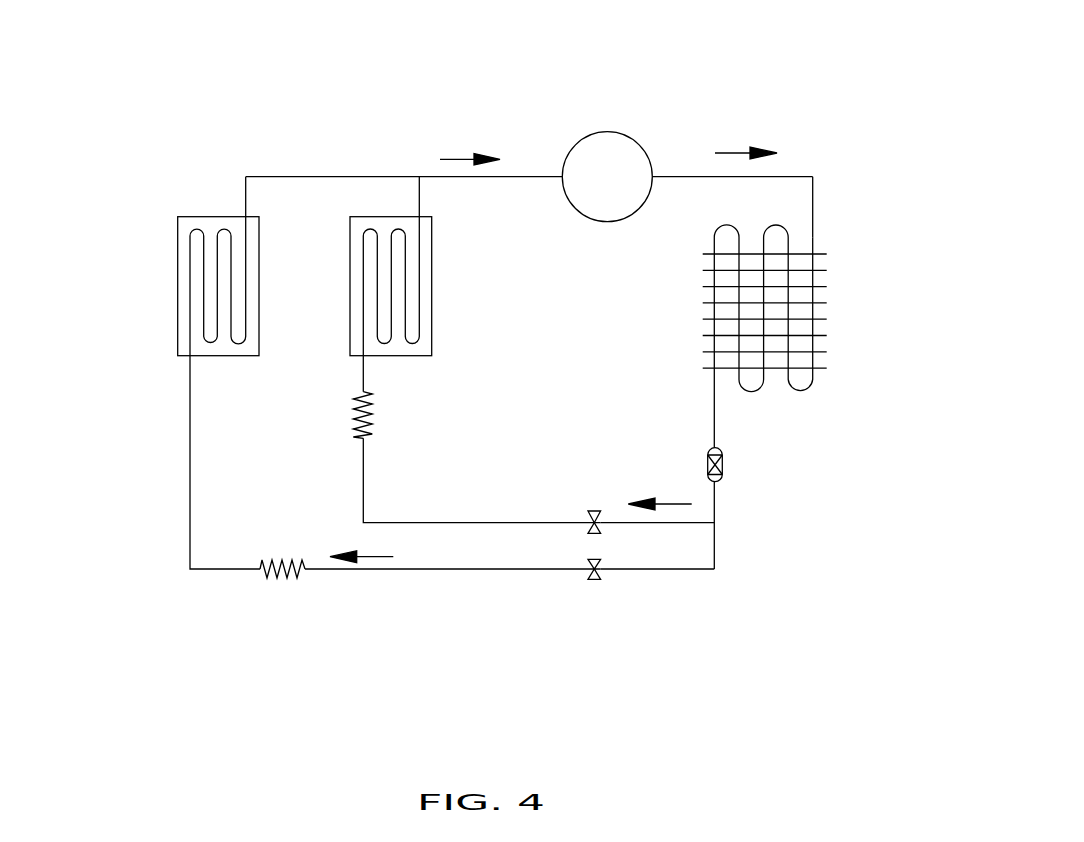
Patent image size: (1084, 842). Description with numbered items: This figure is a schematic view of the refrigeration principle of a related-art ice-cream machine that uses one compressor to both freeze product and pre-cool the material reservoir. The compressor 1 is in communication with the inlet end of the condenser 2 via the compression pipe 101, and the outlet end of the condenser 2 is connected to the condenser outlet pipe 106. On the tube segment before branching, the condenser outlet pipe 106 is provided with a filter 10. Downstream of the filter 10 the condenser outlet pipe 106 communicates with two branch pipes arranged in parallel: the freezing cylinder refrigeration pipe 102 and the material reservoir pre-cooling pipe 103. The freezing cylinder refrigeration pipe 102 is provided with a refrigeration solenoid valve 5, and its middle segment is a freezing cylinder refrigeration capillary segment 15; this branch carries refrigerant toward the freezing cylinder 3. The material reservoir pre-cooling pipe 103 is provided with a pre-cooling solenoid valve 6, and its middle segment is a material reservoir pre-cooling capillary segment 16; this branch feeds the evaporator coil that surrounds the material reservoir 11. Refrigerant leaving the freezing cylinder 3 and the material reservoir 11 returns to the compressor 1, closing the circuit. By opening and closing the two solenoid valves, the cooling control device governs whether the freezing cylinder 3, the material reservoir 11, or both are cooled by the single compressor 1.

The compressor 1 is at (619, 131).
The condenser 2 is at (820, 319).
The freezing cylinder 3 is at (432, 282).
The refrigeration solenoid valve 5 is at (595, 513).
The pre-cooling solenoid valve 6 is at (598, 577).
The filter 10 is at (722, 462).
The material reservoir 11 is at (177, 296).
The freezing cylinder refrigeration capillary segment 15 is at (353, 420).
The material reservoir pre-cooling capillary segment 16 is at (286, 560).
The compression pipe 101 is at (813, 208).
The freezing cylinder refrigeration pipe 102 is at (477, 522).
The material reservoir pre-cooling pipe 103 is at (425, 569).
The condenser outlet pipe 106 is at (715, 505).